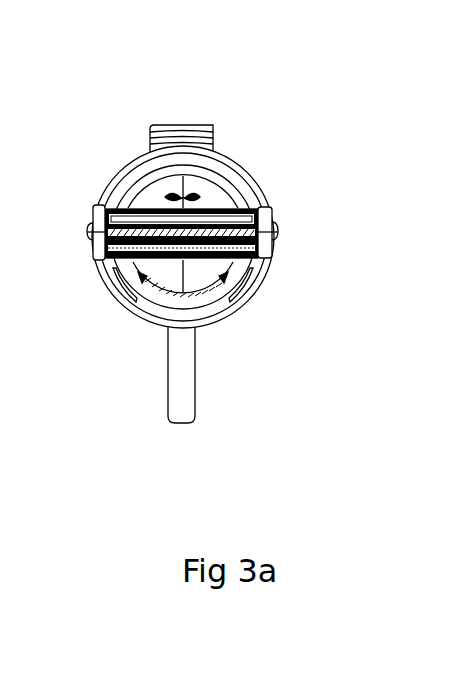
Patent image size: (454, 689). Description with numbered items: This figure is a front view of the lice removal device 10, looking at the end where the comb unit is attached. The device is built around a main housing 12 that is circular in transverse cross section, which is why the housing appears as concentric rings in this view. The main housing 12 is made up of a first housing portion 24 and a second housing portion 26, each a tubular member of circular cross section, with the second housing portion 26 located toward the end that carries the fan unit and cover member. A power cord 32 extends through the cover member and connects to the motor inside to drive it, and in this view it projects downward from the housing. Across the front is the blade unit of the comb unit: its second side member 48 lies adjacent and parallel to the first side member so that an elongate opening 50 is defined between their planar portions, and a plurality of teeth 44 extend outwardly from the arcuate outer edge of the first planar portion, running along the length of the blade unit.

The lice removal device 10 is at (328, 159).
The main housing 12 is at (242, 157).
The first housing portion 24 is at (158, 282).
The second housing portion 26 is at (139, 152).
The power cord 32 is at (190, 398).
The teeth 44 is at (265, 250).
The second side member 48 is at (204, 222).
The elongate opening 50 is at (157, 229).